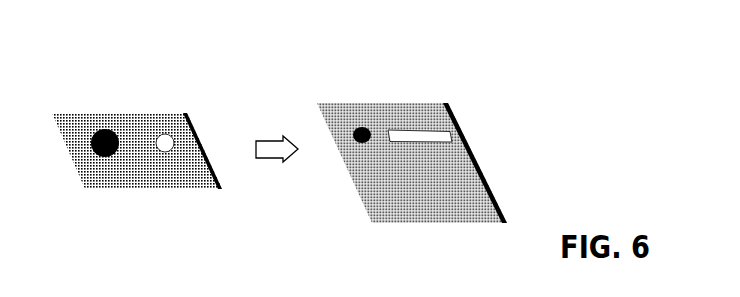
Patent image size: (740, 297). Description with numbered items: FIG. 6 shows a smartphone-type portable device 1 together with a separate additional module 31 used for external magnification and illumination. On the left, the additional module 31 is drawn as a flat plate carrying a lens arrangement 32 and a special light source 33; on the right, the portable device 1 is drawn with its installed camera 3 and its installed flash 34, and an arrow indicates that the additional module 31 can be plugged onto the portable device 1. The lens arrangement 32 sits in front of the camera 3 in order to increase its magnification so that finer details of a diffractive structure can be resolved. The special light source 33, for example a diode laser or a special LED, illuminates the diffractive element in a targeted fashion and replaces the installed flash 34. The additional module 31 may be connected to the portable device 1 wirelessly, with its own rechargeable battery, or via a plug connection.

The portable device 1 is at (378, 123).
The camera 3 is at (344, 130).
The additional module 31 is at (122, 122).
The lens arrangement 32 is at (92, 128).
The light source 33 is at (167, 137).
The flash 34 is at (420, 137).